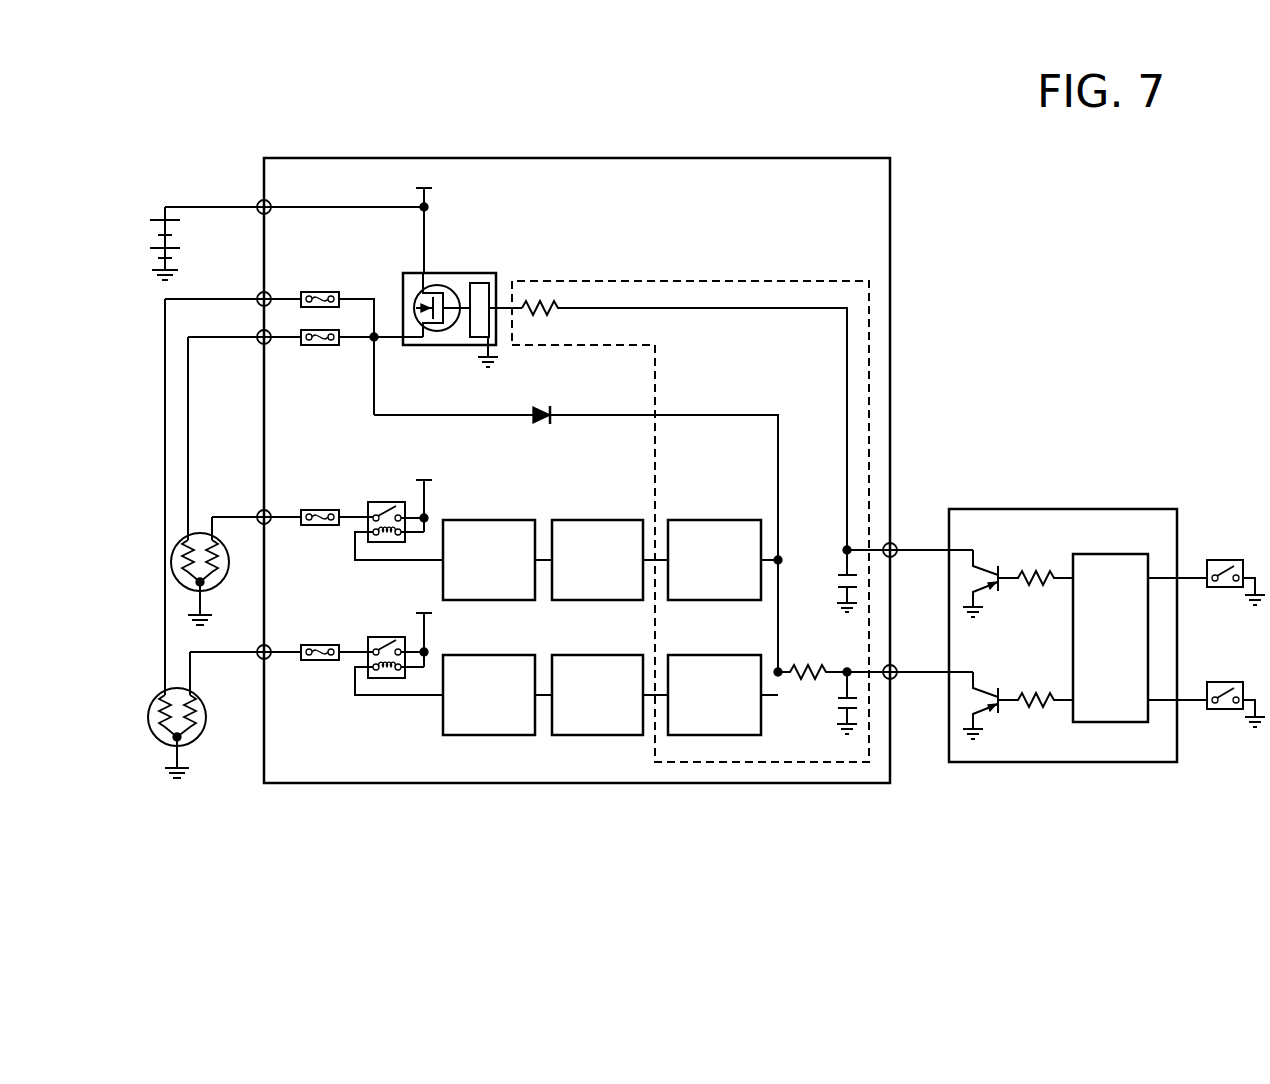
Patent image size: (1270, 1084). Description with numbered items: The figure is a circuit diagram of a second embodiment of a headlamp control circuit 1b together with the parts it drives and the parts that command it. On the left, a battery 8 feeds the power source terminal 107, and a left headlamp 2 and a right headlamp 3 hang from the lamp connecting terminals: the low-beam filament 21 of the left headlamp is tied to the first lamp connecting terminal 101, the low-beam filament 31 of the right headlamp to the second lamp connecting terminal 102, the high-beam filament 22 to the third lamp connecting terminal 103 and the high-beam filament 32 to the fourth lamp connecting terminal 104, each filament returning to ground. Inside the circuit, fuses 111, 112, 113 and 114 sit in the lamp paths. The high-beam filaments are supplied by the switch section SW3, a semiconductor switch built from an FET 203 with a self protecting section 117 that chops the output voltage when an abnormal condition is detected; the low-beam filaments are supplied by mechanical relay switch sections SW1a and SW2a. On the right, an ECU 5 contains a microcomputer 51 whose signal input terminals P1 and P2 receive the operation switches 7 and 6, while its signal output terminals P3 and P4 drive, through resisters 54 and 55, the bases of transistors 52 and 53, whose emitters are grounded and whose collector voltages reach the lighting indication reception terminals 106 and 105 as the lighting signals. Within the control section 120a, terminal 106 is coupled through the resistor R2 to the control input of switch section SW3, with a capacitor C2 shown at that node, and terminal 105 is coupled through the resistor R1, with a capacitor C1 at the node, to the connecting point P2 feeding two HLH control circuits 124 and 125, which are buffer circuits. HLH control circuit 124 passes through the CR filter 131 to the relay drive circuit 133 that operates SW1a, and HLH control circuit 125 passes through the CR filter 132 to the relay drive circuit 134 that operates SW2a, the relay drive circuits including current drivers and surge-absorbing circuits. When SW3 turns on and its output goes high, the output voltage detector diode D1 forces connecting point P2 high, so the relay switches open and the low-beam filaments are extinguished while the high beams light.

The headlamp control circuit 1b is at (805, 158).
The power source terminal 107 is at (260, 200).
The battery 8 is at (182, 236).
The third lamp connecting terminal 103 is at (259, 294).
The fourth lamp connecting terminal 104 is at (259, 342).
The fuse 113 is at (320, 292).
The fuse 114 is at (322, 345).
The third switch section SW3 is at (414, 273).
The FET 203 is at (443, 332).
The self protecting section 117 is at (472, 283).
The control section 120a is at (809, 281).
The resistor R2 is at (684, 425).
The output voltage detector diode D1 is at (549, 407).
The second lamp connecting terminal 102 is at (259, 513).
The first lamp connecting terminal 101 is at (258, 658).
The fuse 112 is at (322, 527).
The fuse 111 is at (322, 662).
The switch section SW2a is at (374, 502).
The switch section SW1a is at (374, 636).
The relay drive circuit 134 is at (512, 520).
The relay drive circuit 133 is at (512, 655).
The CR filter 132 is at (622, 520).
The CR filter 131 is at (622, 655).
The HLH control circuit 125 is at (729, 520).
The HLH control circuit 124 is at (729, 655).
The resistor R1 is at (834, 661).
The connecting point P2 is at (780, 669).
The capacitor C2 is at (836, 577).
The capacitor C1 is at (837, 712).
The lighting indication reception terminal 106 is at (897, 543).
The lighting indication reception terminal 105 is at (897, 665).
The ECU 5 is at (1127, 509).
The transistor 52 is at (992, 568).
The transistor 53 is at (992, 692).
The resister 54 is at (1040, 570).
The resister 55 is at (1040, 694).
The microcomputer 51 is at (1110, 554).
The signal output terminal P3 is at (1071, 582).
The signal output terminal P4 is at (1071, 704).
The signal input terminal P1 is at (1150, 580).
The operation switch 7 is at (1224, 560).
The operation switch 6 is at (1224, 682).
The right headlamp 3 is at (210, 590).
The high-beam filament 32 is at (172, 561).
The low-beam filament 31 is at (218, 568).
The left headlamp 2 is at (152, 702).
The high-beam filament 22 is at (158, 724).
The low-beam filament 21 is at (196, 723).